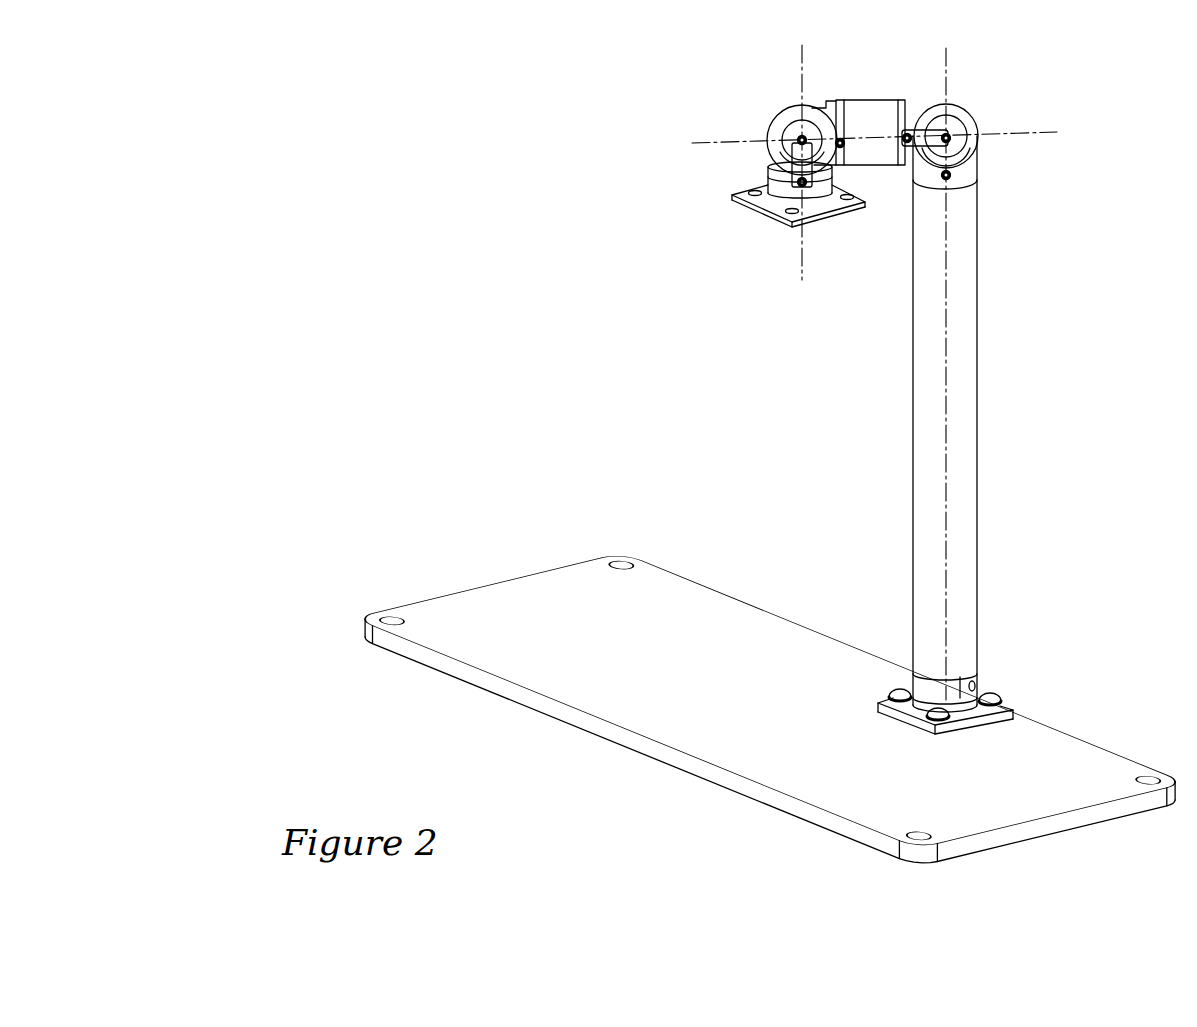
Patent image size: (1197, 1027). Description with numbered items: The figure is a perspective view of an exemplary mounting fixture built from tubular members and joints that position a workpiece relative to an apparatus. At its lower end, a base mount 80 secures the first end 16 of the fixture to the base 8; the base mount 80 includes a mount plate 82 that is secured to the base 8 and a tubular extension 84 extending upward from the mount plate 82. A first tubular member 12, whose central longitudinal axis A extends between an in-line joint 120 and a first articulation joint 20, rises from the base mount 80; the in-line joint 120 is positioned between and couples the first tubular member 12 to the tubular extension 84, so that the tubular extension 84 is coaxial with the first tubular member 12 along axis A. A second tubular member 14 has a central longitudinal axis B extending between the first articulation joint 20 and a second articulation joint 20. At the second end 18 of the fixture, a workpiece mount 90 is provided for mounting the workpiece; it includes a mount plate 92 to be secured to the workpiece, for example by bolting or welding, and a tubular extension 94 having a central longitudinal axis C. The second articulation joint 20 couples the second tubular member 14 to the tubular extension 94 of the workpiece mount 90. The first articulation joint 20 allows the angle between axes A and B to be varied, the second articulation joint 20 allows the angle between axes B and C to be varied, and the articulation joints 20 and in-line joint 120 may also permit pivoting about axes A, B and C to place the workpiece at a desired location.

The base 8 is at (513, 598).
The first tubular member 12 is at (962, 413).
The second tubular member 14 is at (872, 108).
The first end 16 is at (942, 667).
The second end 18 is at (846, 177).
The articulation joint 20 is at (775, 102).
The base mount 80 is at (979, 724).
The mount plate 82 is at (965, 727).
The tubular extension 84 is at (925, 705).
The workpiece mount 90 is at (747, 173).
The mount plate 92 is at (760, 208).
The tubular extension 94 is at (812, 193).
The in-line joint 120 is at (990, 669).